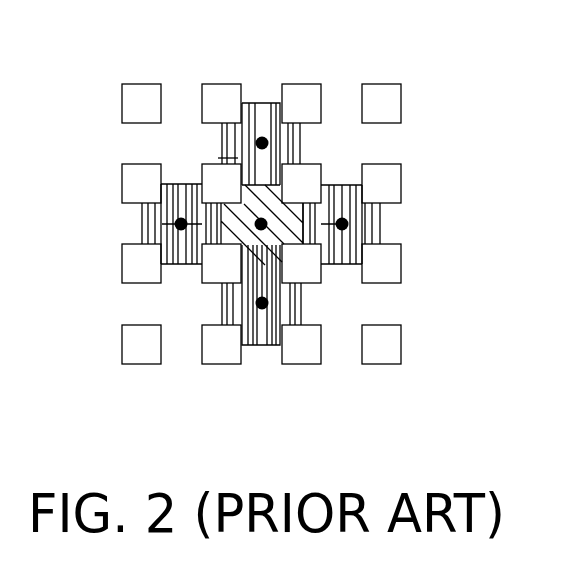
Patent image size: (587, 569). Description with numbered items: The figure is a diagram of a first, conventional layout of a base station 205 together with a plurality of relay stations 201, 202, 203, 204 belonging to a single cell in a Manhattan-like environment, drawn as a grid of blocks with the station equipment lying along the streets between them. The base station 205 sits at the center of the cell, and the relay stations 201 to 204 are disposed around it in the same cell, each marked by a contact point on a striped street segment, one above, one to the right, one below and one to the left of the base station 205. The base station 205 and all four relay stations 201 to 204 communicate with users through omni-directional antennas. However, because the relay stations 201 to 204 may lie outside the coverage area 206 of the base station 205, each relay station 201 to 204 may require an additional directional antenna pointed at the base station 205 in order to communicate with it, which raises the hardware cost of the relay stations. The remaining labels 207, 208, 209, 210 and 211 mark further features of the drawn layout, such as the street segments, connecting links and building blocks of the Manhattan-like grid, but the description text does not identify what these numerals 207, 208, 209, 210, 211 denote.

The relay station 201 is at (262, 224).
The relay station 202 is at (342, 224).
The relay station 203 is at (262, 303).
The relay station 204 is at (162, 224).
The base station 205 is at (267, 156).
The coverage area 206 is at (252, 158).
The interconnect vias 207 is at (222, 157).
The conductive line 208 is at (351, 182).
The interconnect vias 209 is at (302, 313).
The interconnect vias 210 is at (141, 213).
The contact pad 211 is at (142, 84).